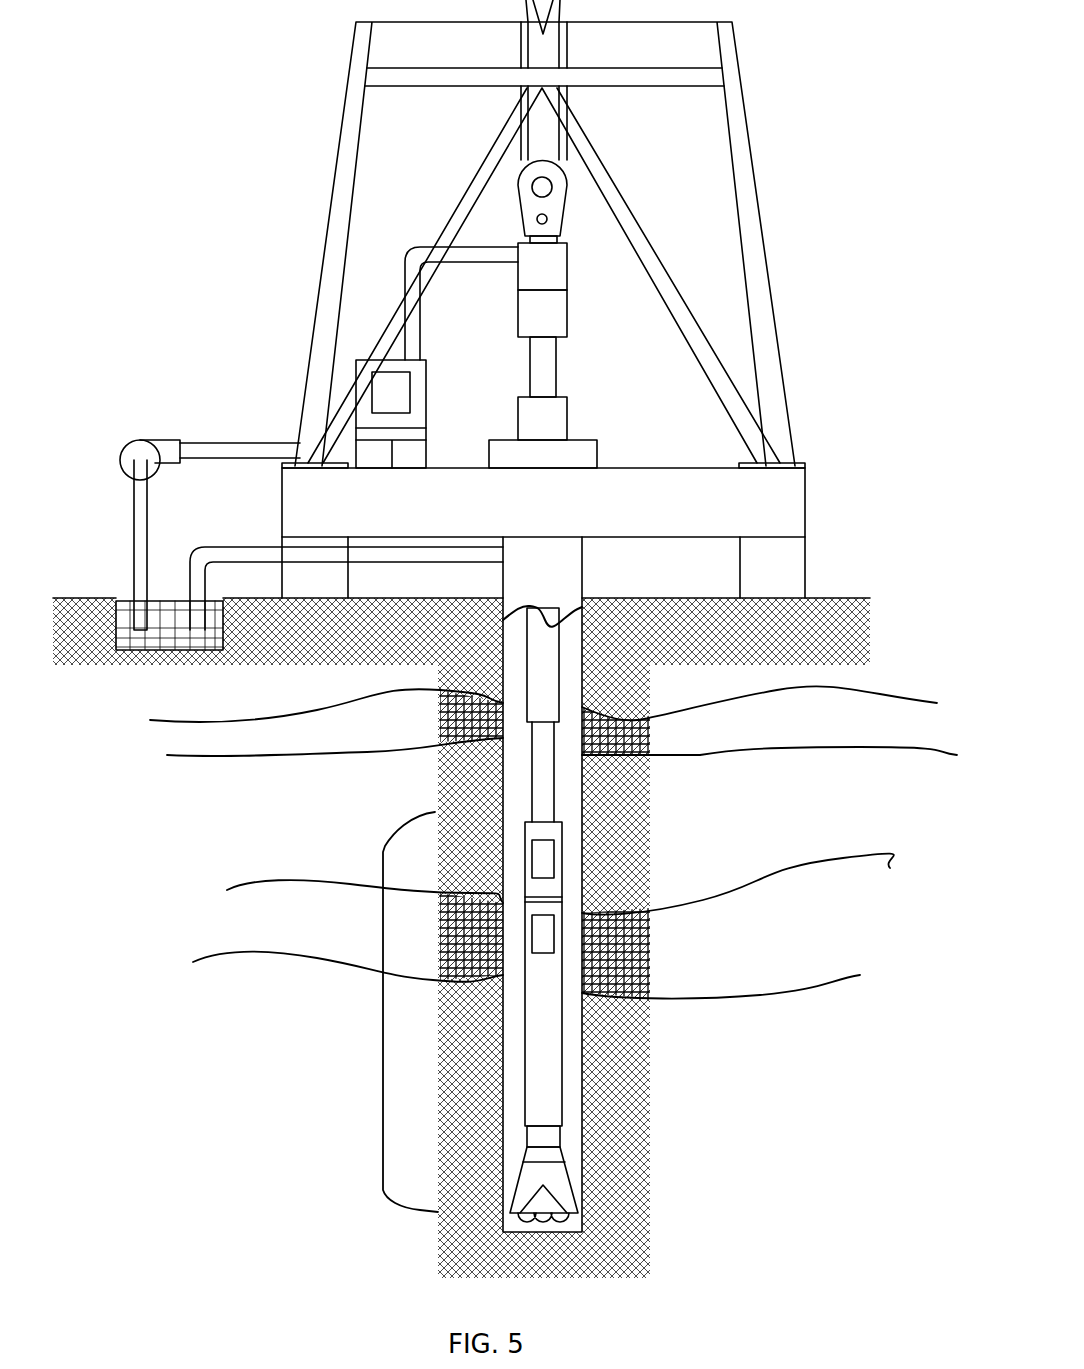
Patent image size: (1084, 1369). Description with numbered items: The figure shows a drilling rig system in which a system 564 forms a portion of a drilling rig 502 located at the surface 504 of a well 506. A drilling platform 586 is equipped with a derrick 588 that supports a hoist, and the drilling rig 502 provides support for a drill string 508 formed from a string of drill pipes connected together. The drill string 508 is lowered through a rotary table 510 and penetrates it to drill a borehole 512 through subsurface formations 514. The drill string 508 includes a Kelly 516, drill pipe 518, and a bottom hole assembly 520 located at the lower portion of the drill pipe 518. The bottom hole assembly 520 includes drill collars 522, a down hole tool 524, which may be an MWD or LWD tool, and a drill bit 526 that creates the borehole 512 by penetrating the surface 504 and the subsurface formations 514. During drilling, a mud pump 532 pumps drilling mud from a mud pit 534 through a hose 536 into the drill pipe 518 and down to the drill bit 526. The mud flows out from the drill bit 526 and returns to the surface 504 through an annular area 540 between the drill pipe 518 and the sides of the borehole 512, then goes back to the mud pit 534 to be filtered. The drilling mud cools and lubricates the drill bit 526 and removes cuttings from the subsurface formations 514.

The system 564 is at (517, 299).
The drilling rig 502 is at (590, 233).
The derrick 588 is at (755, 157).
The drilling platform 586 is at (805, 478).
The rotary table 510 is at (597, 455).
The Kelly 516 is at (556, 368).
The hose 536 is at (250, 443).
The mud pump 532 is at (135, 440).
The mud pit 534 is at (168, 632).
The surface 504 is at (870, 598).
The well 506 is at (592, 592).
The drill string 508 is at (614, 915).
The drill collars 522 is at (559, 678).
The drill pipe 518 is at (554, 785).
The annular area 540 is at (568, 825).
The down hole tool 524 is at (548, 1112).
The drill bit 526 is at (553, 1183).
The borehole 512 is at (579, 1105).
The subsurface formations 514 is at (153, 710).
The bottom hole assembly 520 is at (383, 1010).